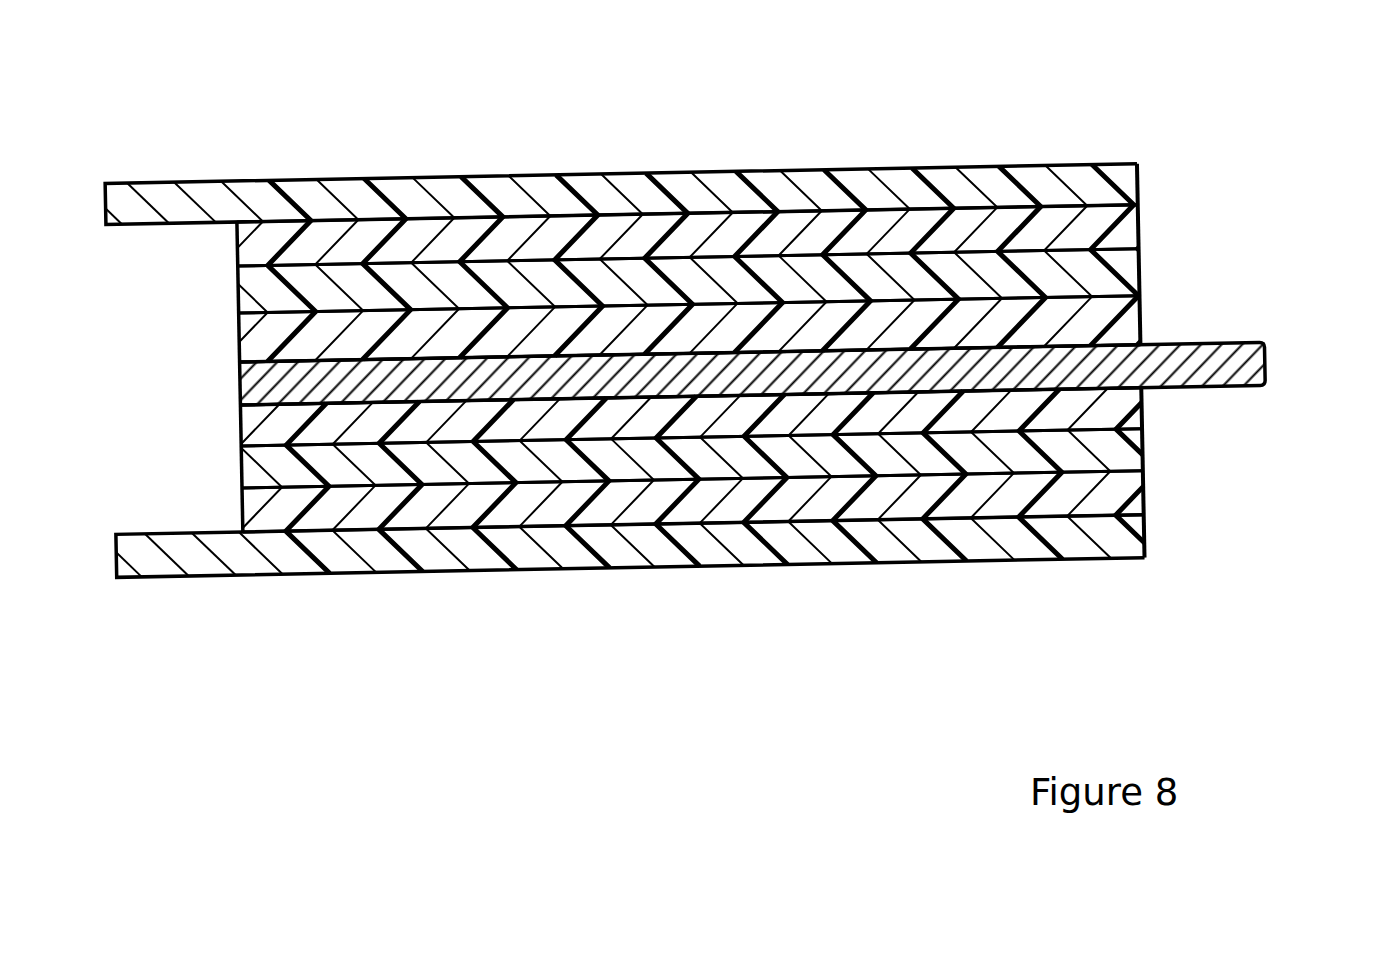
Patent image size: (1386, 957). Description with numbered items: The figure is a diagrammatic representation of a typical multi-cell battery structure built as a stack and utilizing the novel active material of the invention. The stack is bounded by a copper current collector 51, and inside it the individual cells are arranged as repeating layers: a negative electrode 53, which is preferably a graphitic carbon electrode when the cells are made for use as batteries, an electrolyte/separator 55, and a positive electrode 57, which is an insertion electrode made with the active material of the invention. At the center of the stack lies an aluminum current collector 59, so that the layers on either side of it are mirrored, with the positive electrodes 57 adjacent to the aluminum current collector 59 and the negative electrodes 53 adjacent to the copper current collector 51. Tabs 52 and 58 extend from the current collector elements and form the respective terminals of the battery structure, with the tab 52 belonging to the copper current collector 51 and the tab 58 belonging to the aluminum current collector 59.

The copper current collector 51 is at (1142, 165).
The tab 52 is at (165, 183).
The negative electrode 53 is at (1142, 226).
The electrolyte/separator 55 is at (1143, 273).
The positive electrode 57 is at (255, 340).
The tab 58 is at (1267, 363).
The aluminum current collector 59 is at (255, 388).